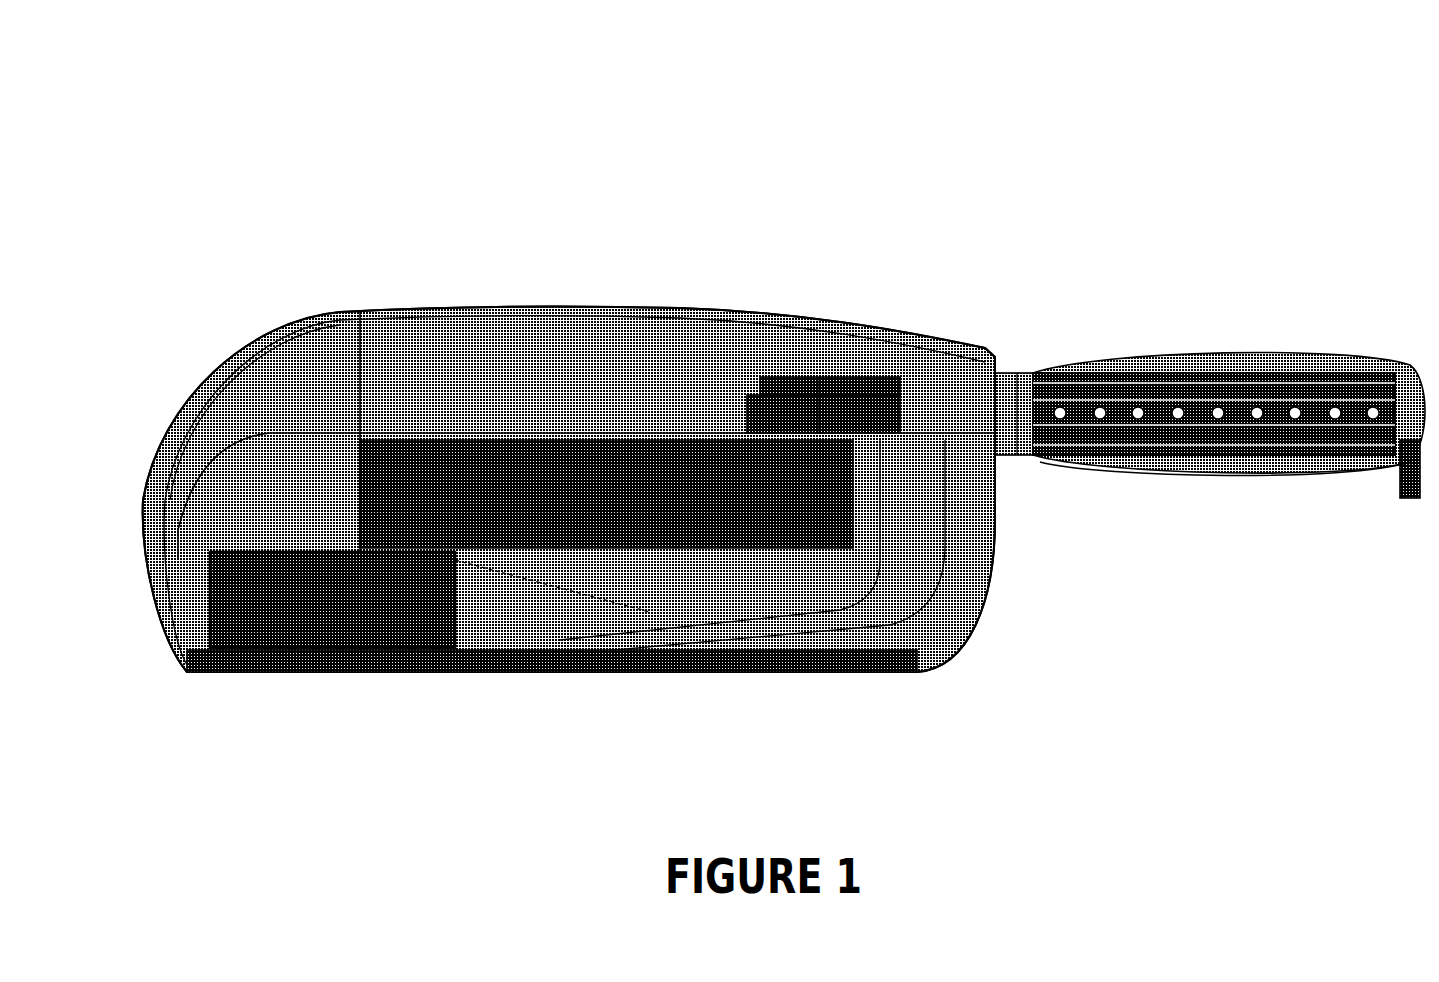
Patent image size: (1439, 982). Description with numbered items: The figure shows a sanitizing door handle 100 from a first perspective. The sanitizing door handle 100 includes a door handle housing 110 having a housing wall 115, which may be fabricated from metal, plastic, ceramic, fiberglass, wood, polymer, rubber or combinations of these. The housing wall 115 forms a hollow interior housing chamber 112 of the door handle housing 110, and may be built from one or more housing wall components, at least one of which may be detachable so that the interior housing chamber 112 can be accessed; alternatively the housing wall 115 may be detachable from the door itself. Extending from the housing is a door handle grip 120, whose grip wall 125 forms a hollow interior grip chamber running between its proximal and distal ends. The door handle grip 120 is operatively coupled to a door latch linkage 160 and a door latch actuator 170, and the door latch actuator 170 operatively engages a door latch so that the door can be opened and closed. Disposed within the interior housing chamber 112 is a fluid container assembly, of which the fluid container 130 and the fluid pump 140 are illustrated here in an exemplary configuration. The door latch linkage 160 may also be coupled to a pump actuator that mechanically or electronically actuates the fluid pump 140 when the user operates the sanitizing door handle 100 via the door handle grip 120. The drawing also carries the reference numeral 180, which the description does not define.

The sanitizing door handle 100 is at (278, 112).
The door handle housing 110 is at (288, 348).
The interior housing chamber 112 is at (431, 350).
The housing wall 115 is at (212, 365).
The door handle grip 120 is at (1195, 367).
The grip wall 125 is at (1237, 475).
The fluid container 130 is at (643, 478).
The fluid pump 140 is at (800, 385).
The door latch linkage 160 is at (900, 600).
The door latch actuator 170 is at (252, 627).
The bottom plate 180 is at (408, 660).